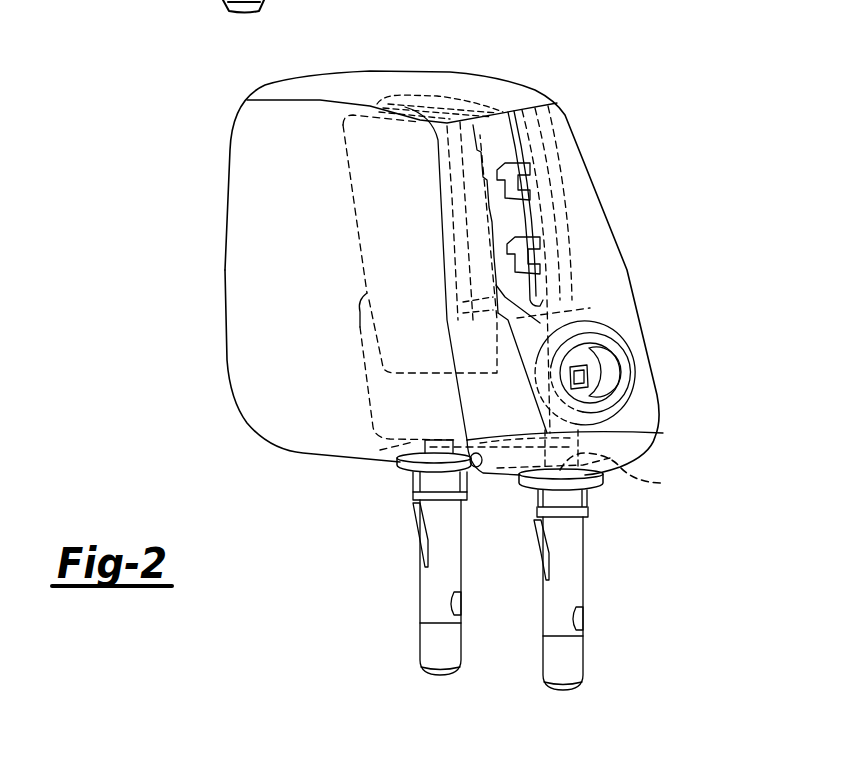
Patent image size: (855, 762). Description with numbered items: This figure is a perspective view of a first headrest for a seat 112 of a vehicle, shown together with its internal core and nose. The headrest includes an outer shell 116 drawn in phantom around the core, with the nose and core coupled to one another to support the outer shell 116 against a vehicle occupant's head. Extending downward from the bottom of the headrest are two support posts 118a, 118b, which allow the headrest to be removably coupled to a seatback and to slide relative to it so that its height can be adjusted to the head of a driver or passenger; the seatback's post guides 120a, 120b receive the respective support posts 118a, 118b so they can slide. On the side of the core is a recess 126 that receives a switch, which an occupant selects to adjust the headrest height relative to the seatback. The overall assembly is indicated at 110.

The light assembly 110 is at (533, 52).
The seat 112 is at (651, 131).
The outer shell 116 is at (572, 210).
The recess 126 is at (603, 373).
The support post 118a is at (420, 440).
The support post 118b is at (613, 473).
The post guide 120a is at (420, 588).
The post guide 120b is at (583, 573).